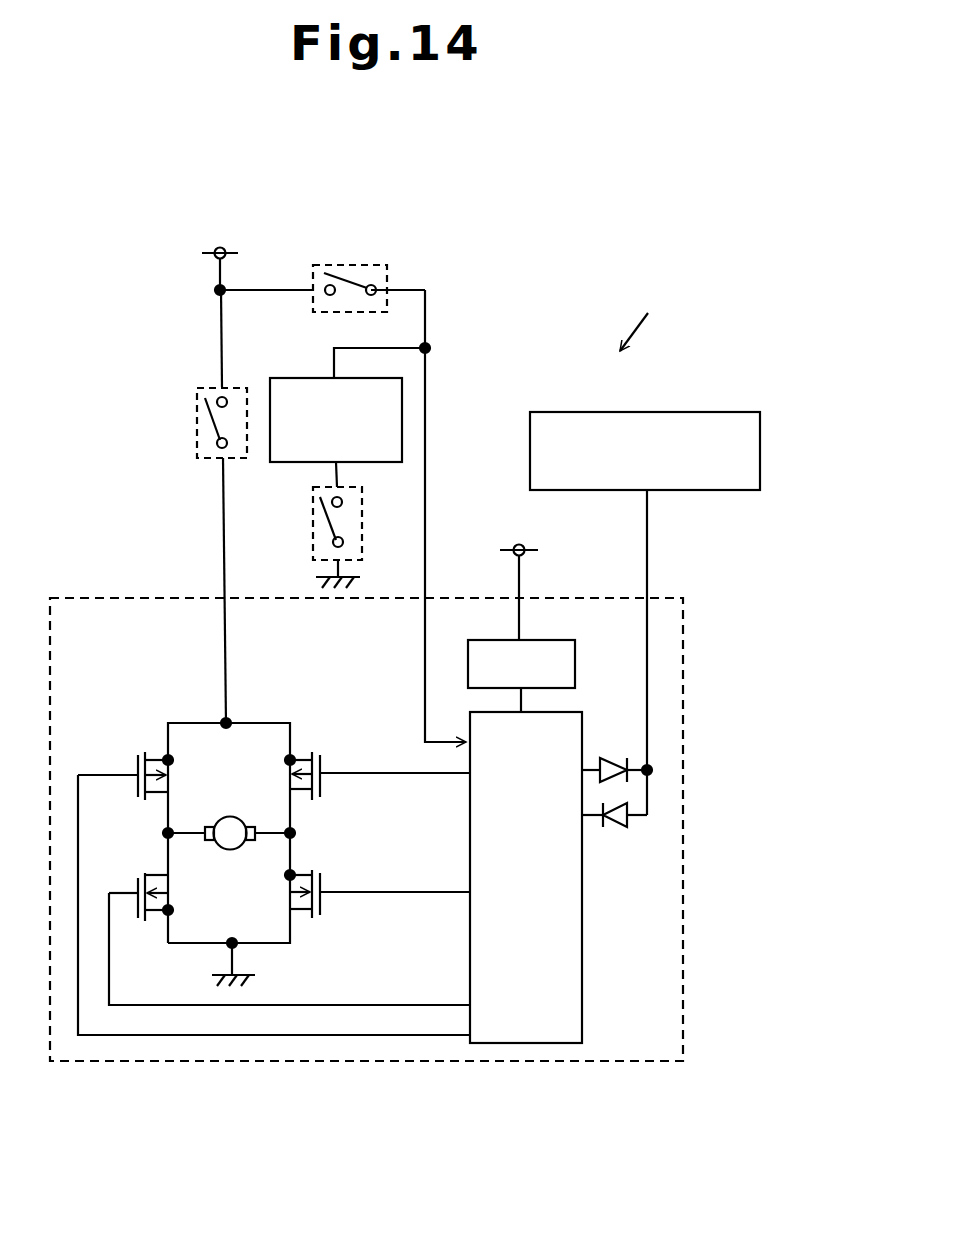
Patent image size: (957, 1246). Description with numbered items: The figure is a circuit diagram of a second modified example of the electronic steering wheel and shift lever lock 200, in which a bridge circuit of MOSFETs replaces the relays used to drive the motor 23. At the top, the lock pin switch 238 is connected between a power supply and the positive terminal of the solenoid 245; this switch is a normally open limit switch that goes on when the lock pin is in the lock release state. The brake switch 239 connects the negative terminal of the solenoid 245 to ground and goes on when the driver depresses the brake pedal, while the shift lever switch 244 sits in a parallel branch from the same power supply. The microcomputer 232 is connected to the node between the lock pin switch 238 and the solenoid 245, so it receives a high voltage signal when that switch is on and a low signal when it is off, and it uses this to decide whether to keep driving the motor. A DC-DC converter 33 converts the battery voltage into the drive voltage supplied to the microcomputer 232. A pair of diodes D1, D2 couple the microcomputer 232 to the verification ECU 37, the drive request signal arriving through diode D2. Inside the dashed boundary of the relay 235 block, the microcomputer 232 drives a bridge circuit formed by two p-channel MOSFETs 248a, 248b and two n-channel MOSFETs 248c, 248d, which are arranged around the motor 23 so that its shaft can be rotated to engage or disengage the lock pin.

The electronic steering wheel and shift lever lock 200 is at (662, 314).
The lock pin switch 238 is at (388, 266).
The shift lever switch 244 is at (197, 410).
The solenoid 245 is at (392, 462).
The brake switch 239 is at (313, 512).
The verification ECU 37 is at (760, 460).
The DC-DC converter 33 is at (548, 640).
The relay 235 is at (686, 970).
The microcomputer 232 is at (582, 1000).
The diode D1 is at (616, 757).
The diode D2 is at (614, 828).
The motor 23 is at (231, 816).
The p-channel MOSFET 248a is at (324, 764).
The p-channel MOSFET 248b is at (136, 768).
The n-channel MOSFET 248c is at (136, 906).
The n-channel MOSFET 248d is at (322, 905).